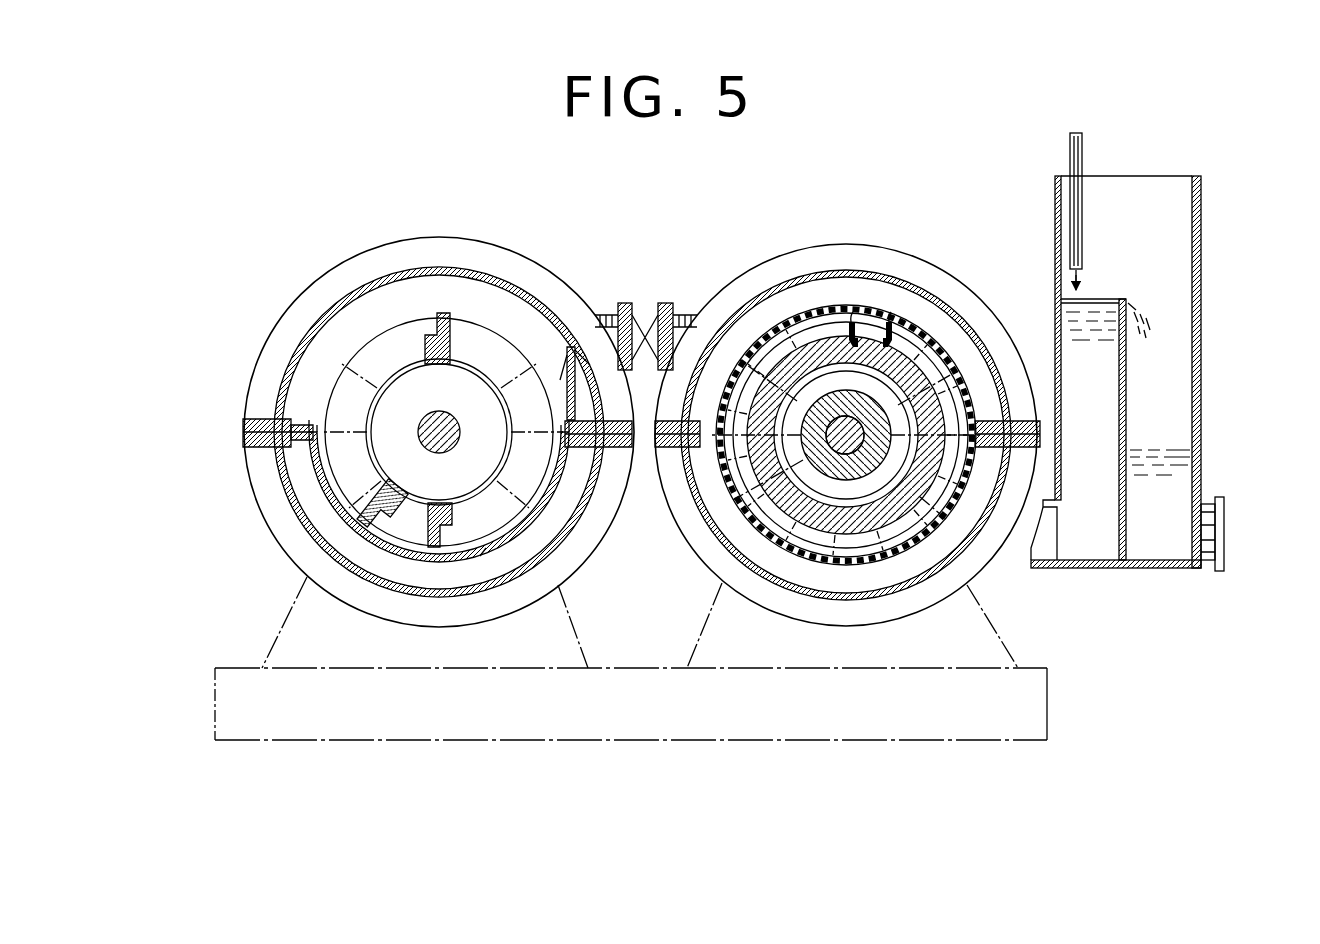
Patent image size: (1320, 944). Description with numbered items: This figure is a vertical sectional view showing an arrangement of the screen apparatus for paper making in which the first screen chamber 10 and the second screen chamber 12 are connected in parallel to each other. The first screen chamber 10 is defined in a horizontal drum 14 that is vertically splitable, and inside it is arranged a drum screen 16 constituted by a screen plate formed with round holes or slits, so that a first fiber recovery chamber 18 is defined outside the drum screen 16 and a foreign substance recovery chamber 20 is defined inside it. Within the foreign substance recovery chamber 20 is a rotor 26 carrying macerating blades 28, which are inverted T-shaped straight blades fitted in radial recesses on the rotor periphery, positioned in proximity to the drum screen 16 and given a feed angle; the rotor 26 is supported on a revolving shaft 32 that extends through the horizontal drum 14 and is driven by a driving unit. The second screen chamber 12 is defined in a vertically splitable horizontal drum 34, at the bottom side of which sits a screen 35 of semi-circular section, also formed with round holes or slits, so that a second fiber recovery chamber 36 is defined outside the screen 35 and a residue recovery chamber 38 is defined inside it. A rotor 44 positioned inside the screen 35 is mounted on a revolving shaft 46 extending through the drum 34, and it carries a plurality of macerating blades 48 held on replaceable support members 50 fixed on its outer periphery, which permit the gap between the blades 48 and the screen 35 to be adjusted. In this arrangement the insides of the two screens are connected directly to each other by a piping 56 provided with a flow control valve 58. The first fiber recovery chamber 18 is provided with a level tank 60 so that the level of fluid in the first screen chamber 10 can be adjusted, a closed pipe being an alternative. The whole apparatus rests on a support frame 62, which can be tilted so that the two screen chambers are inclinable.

The first screen chamber 10 is at (941, 253).
The second screen chamber 12 is at (513, 240).
The horizontal drum 14 is at (875, 272).
The drum screen 16 is at (935, 333).
The first fiber recovery chamber 18 is at (958, 540).
The foreign substance recovery chamber 20 is at (882, 535).
The rotor 26 is at (815, 330).
The macerating blades 28 is at (849, 320).
The revolving shaft 32 is at (844, 442).
The horizontal drum 34 is at (533, 295).
The screen 35 is at (482, 560).
The second fiber recovery chamber 36 is at (556, 522).
The residue recovery chamber 38 is at (395, 540).
The rotor 44 is at (400, 367).
The revolving shaft 46 is at (455, 450).
The macerating blades 48 is at (455, 313).
The support members 50 is at (430, 338).
The piping 56 is at (686, 312).
The flow control valve 58 is at (628, 303).
The level tank 60 is at (1200, 303).
The support frame 62 is at (1048, 717).